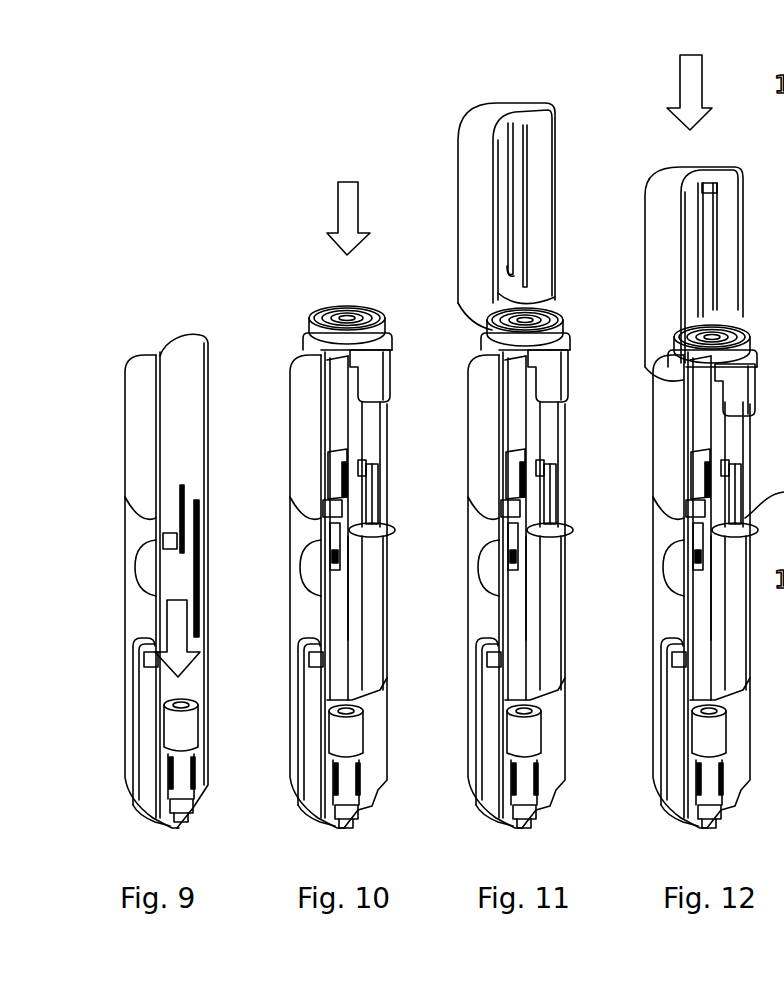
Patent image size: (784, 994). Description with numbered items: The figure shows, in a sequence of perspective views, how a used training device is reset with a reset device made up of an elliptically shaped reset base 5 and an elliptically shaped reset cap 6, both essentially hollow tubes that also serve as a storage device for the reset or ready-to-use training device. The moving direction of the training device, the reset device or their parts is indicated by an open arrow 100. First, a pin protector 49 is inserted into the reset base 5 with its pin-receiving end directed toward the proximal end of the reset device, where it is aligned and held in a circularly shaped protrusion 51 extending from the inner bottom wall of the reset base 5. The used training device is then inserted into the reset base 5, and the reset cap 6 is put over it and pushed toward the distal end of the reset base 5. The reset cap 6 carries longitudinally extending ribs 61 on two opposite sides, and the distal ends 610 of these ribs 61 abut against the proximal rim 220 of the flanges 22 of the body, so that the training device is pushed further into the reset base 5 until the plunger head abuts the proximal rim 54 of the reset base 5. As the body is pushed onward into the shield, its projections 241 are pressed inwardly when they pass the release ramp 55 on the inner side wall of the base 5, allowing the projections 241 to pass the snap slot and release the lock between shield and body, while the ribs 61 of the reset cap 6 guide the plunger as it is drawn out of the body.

In FIG. 9, the reset base 5 is at (137, 468).
In FIG. 10, the reset base 5 is at (305, 385).
In FIG. 11, the reset cap 6 is at (473, 175).
In FIG. 10, the flanges 22 is at (372, 378).
In FIG. 9, the pin protector 49 is at (177, 732).
In FIG. 9, the circularly shaped protrusion 51 is at (128, 754).
In FIG. 11, the proximal rim 54 is at (483, 330).
In FIG. 9, the release ramp 55 is at (198, 522).
In FIG. 11, the longitudinally extending ribs 61 is at (502, 220).
In FIG. 9, the open arrow 100 is at (172, 628).
In FIG. 10, the open arrow 100 is at (345, 192).
In FIG. 12, the open arrow 100 is at (690, 92).
In FIG. 11, the proximal rim 220 is at (562, 333).
In FIG. 12, the projections 241 is at (712, 522).
In FIG. 11, the distal ends 610 is at (503, 273).